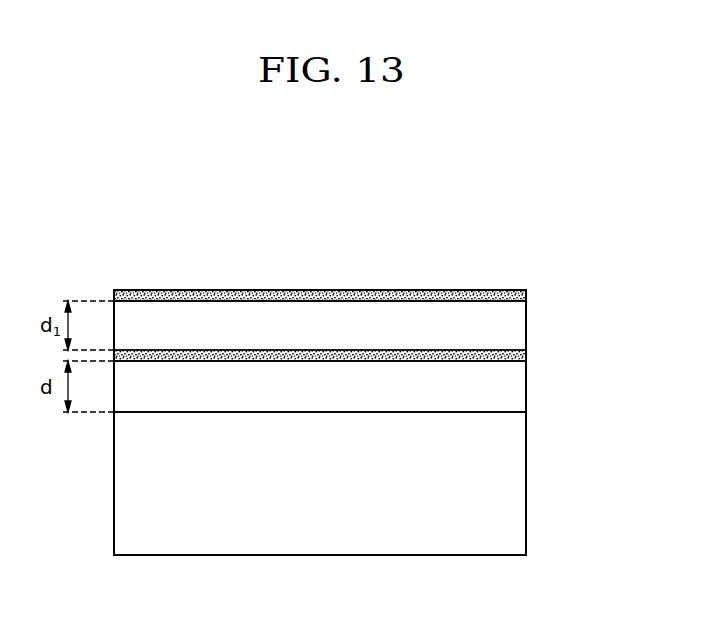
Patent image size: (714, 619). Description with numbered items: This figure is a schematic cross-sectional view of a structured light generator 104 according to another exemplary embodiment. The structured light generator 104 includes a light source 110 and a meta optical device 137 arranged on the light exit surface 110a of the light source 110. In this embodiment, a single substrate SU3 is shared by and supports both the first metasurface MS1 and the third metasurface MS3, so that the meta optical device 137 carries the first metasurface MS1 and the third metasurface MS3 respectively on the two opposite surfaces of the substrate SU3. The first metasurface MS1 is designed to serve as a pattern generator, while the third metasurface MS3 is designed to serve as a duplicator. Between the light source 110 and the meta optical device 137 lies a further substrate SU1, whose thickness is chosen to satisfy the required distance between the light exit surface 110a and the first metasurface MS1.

The structured light generator 104 is at (490, 253).
The third metasurface MS3 is at (526, 296).
The substrate SU3 is at (512, 324).
The first metasurface MS1 is at (526, 357).
The substrate SU1 is at (512, 388).
The light exit surface 110a is at (493, 412).
The light source 110 is at (515, 483).
The meta optical device 137 is at (613, 270).